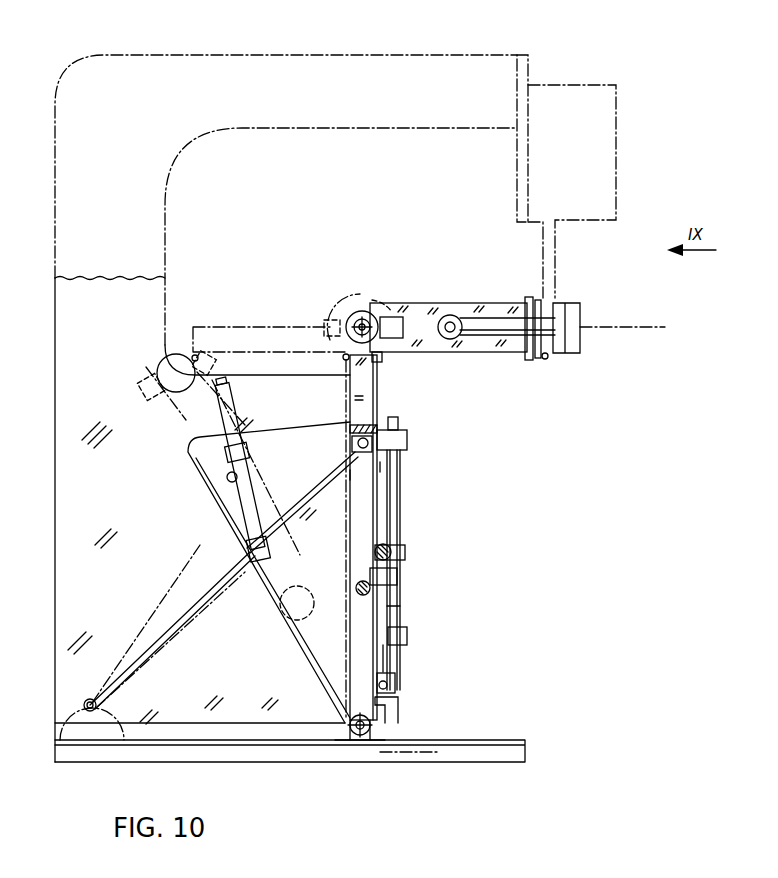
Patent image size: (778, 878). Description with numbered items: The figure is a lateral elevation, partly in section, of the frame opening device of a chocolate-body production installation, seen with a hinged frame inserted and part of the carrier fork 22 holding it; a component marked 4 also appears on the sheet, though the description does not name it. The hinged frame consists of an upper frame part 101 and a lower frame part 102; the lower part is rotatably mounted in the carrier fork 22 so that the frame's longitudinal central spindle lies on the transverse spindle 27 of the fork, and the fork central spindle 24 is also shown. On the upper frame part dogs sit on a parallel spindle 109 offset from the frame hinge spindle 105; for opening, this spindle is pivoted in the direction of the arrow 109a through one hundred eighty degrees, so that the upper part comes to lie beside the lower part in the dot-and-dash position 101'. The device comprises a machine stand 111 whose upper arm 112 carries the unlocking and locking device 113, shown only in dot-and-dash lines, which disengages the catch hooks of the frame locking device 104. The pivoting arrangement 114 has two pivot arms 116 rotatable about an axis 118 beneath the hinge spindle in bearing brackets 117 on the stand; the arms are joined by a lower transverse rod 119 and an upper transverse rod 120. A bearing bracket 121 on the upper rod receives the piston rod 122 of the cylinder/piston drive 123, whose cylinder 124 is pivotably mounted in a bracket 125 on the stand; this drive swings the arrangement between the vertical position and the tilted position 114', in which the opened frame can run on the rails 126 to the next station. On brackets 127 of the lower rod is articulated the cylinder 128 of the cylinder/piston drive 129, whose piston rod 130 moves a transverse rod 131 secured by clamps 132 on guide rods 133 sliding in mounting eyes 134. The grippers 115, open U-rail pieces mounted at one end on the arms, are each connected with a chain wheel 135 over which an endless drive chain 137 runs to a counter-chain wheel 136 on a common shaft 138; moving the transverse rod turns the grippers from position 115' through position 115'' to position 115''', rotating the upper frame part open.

The upper arm 112 is at (297, 75).
The unlocking and locking device 113 is at (550, 240).
The upper frame part in opened position 101' is at (269, 315).
The chain wheel 135 is at (350, 312).
The frame hinge spindle 105 is at (354, 296).
The arrow 109a is at (372, 287).
The parallel spindle 109 is at (396, 317).
The upper frame part 101 is at (448, 307).
The carrier 4 is at (481, 303).
The locking device 104 is at (550, 306).
The fork central spindle 24 is at (650, 326).
The carrier fork 22 is at (592, 341).
The transverse spindle 27 is at (458, 338).
The lower frame part 102 is at (438, 346).
The grippers 115 is at (394, 362).
The gripper starting position 115' is at (149, 387).
The gripper engaging position 115'' is at (189, 373).
The gripper open position 115''' is at (301, 317).
The rails 126 is at (195, 356).
The pivoting arrangement 114 is at (398, 537).
The guide rods 133 is at (402, 460).
The mounting eyes 134 is at (407, 437).
The upper transverse rod 120 is at (380, 428).
The bearing bracket 121 is at (350, 441).
The piston rod 122 is at (324, 480).
The pivot arms 116 is at (348, 500).
The endless drive chain 137 is at (345, 482).
The clamps 132 is at (400, 545).
The transverse rod 131 is at (392, 551).
The piston rod 130 is at (398, 577).
The common shaft 138 is at (372, 590).
The cylinder/piston drive 129 is at (408, 613).
The cylinder 128 is at (386, 658).
The brackets 127 is at (398, 690).
The lower transverse rod 119 is at (395, 705).
The bearing brackets 117 is at (376, 745).
The axis 118 is at (352, 742).
The machine stand 111 is at (433, 781).
The bracket 125 is at (84, 705).
The cylinder 124 is at (167, 640).
The cylinder/piston drive 123 is at (207, 636).
The pivoting arrangement tilted position 114' is at (182, 630).
The counter-chain wheel 136 is at (314, 604).